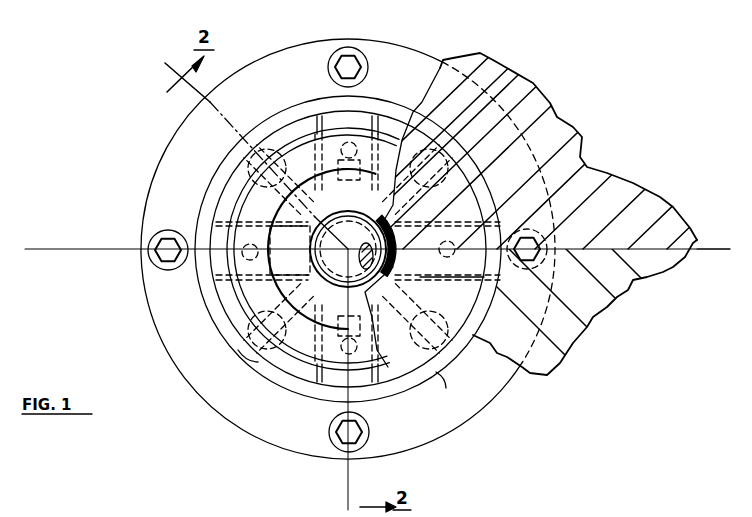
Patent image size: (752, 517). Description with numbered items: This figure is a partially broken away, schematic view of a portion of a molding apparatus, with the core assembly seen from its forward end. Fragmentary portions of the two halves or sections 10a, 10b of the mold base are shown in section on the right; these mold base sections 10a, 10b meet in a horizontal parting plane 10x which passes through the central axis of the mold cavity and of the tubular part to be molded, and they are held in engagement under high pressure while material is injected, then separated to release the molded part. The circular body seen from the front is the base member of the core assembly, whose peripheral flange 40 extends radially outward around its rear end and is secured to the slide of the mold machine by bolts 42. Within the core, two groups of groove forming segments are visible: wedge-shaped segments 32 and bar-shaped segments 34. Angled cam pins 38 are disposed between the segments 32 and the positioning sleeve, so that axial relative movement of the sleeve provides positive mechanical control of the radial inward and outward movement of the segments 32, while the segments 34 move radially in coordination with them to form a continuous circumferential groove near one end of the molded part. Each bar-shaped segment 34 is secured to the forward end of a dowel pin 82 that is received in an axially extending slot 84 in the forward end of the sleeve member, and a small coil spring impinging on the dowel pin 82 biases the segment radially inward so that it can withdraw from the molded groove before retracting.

The mold base section 10a is at (613, 193).
The mold base section 10b is at (617, 283).
The parting plane 10x is at (722, 250).
The wedge-shaped groove forming segments 32 is at (230, 183).
The bar-shaped groove forming segments 34 is at (332, 115).
The angled cam pins 38 is at (236, 349).
The peripheral flange 40 is at (167, 177).
The bolts 42 is at (368, 67).
The dowel pin 82 is at (215, 277).
The axially extending slot 84 is at (470, 263).